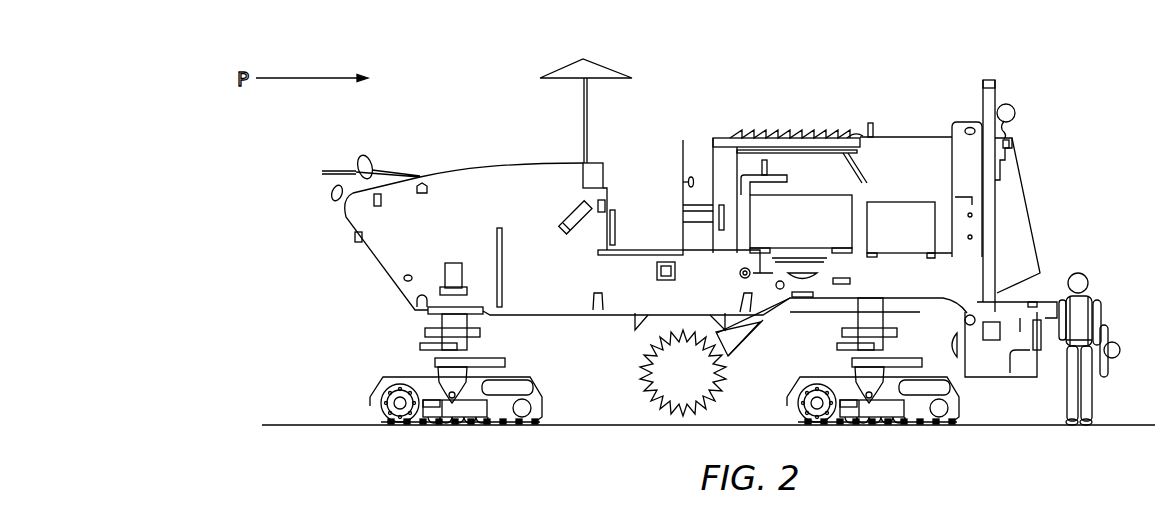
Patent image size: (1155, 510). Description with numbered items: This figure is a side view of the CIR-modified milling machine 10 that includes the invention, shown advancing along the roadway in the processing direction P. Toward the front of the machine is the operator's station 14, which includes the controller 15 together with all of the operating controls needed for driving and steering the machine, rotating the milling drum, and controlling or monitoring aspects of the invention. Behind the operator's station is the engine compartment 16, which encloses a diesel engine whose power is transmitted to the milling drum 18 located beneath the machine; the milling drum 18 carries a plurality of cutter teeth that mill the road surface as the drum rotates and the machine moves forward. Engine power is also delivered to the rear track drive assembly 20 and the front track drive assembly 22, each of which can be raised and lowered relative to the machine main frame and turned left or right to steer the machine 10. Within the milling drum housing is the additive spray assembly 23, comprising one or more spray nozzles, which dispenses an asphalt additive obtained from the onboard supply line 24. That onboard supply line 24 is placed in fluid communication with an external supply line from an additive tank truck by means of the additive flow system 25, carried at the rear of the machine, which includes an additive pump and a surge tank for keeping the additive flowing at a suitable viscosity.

The CIR-modified milling machine 10 is at (707, 60).
The operator's station 14 is at (637, 148).
The controller 15 is at (580, 173).
The engine compartment 16 is at (826, 126).
The milling drum 18 is at (628, 380).
The rear track drive assembly 20 is at (353, 383).
The front track drive assembly 22 is at (969, 404).
The additive spray assembly 23 is at (758, 330).
The onboard supply line 24 is at (837, 310).
The additive flow system 25 is at (1042, 280).